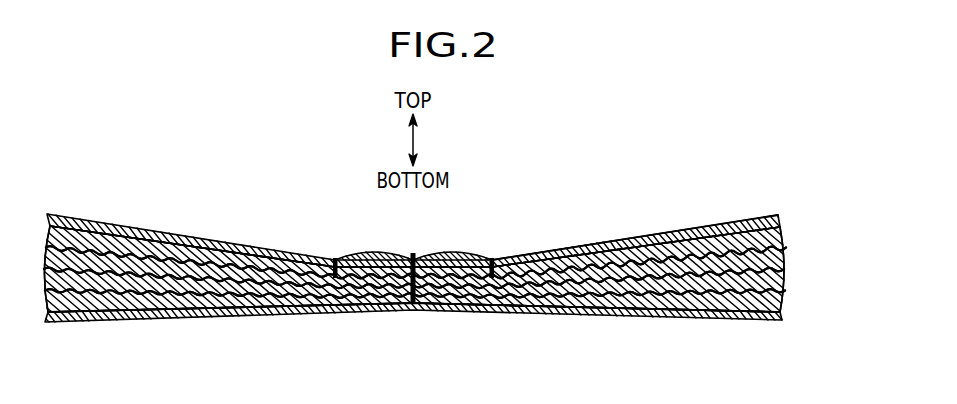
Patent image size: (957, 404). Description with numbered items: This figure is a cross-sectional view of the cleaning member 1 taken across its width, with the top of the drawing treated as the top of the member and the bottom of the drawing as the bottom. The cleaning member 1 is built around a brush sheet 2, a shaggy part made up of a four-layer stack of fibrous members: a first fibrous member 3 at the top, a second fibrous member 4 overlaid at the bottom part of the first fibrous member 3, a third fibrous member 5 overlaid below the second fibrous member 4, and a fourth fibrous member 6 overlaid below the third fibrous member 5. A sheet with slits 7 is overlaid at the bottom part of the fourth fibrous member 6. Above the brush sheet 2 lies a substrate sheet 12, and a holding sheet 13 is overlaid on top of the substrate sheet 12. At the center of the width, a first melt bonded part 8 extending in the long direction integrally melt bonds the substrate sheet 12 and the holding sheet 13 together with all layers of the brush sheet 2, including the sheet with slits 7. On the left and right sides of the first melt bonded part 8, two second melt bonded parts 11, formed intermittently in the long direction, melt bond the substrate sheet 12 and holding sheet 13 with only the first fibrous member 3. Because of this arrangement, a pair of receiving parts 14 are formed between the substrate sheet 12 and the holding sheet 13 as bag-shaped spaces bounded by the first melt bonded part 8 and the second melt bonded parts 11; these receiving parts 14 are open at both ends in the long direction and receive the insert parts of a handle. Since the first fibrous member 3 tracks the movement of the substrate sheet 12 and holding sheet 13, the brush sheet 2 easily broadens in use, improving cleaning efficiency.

The cleaning member 1 is at (615, 184).
The brush sheet 2 is at (820, 220).
The first fibrous member 3 is at (783, 236).
The second fibrous member 4 is at (783, 259).
The third fibrous member 5 is at (783, 283).
The fourth fibrous member 6 is at (783, 305).
The sheet with slits 7 is at (783, 318).
The first melt bonded part 8 is at (414, 255).
The second melt bonded parts 11 is at (335, 258).
The substrate sheet 12 is at (782, 222).
The holding sheet 13 is at (756, 216).
The receiving parts 14 is at (368, 261).